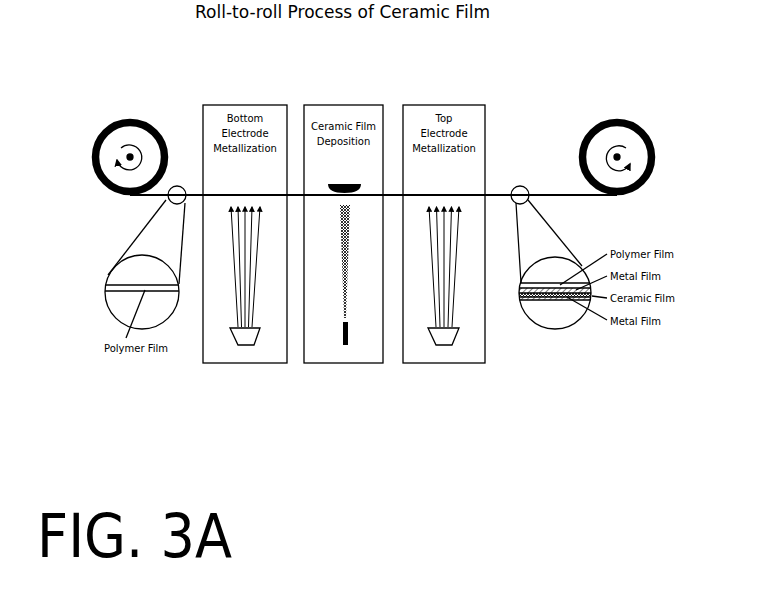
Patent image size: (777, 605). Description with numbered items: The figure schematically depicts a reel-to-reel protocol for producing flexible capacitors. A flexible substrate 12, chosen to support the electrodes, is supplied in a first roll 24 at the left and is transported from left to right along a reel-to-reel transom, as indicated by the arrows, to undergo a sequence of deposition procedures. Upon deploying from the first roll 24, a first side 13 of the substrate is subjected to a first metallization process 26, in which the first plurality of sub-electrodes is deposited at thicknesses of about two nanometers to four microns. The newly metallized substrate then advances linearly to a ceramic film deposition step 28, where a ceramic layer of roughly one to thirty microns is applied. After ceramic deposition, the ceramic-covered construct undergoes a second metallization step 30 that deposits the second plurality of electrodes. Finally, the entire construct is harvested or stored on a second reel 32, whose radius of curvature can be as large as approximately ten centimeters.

The flexible substrate 12 is at (155, 192).
The first side 13 is at (150, 201).
The first roll 24 is at (114, 152).
The first metallization process 26 is at (244, 337).
The ceramic film deposition step 28 is at (347, 348).
The second metallization step 30 is at (443, 335).
The second reel 32 is at (633, 148).